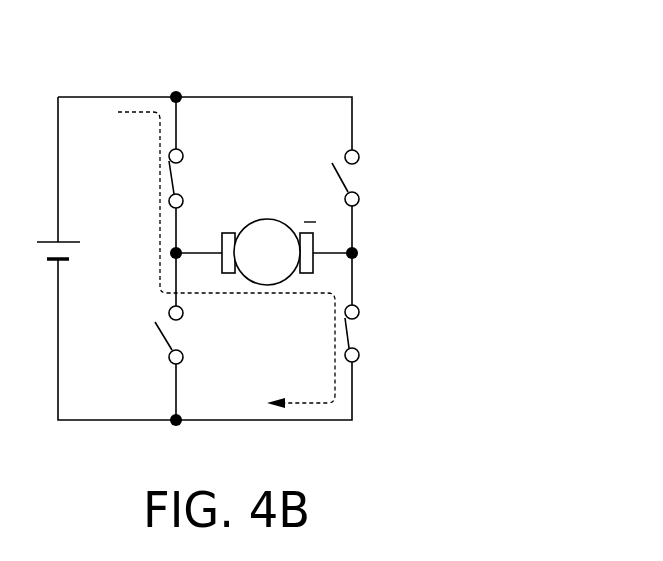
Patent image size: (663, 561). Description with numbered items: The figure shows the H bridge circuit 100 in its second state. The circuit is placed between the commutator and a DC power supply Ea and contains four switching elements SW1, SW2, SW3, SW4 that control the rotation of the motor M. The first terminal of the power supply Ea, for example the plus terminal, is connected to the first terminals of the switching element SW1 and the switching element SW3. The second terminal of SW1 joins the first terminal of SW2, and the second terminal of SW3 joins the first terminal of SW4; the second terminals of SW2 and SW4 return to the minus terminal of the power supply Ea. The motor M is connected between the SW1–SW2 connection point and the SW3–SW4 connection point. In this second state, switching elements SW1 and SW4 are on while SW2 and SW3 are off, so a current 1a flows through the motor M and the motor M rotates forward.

The H bridge circuit 100 is at (327, 80).
The current 1a is at (335, 363).
The switching element SW1 is at (173, 175).
The switching element SW2 is at (175, 330).
The switching element SW3 is at (353, 174).
The switching element SW4 is at (352, 331).
The DC power supply Ea is at (63, 236).
The motor M is at (265, 247).